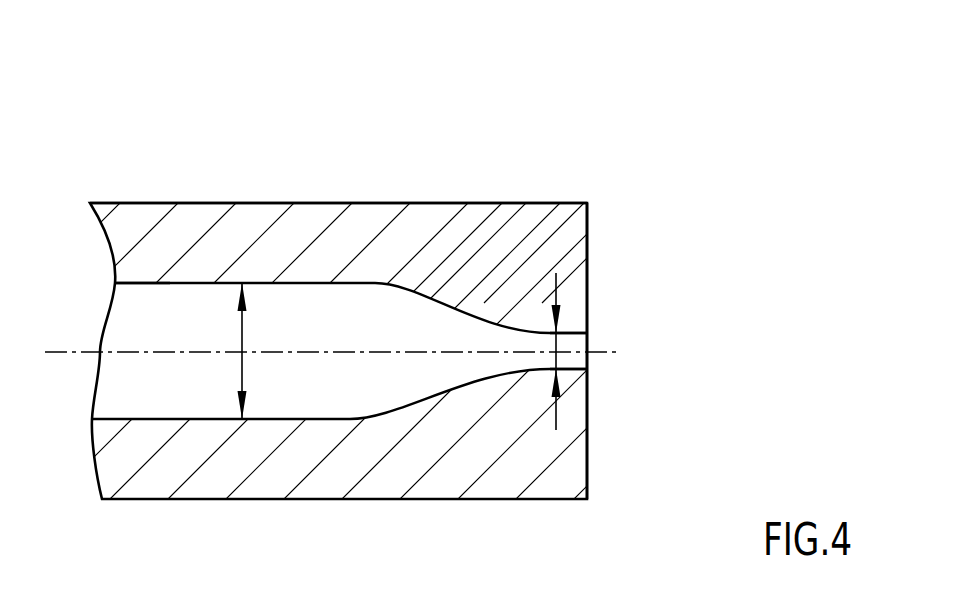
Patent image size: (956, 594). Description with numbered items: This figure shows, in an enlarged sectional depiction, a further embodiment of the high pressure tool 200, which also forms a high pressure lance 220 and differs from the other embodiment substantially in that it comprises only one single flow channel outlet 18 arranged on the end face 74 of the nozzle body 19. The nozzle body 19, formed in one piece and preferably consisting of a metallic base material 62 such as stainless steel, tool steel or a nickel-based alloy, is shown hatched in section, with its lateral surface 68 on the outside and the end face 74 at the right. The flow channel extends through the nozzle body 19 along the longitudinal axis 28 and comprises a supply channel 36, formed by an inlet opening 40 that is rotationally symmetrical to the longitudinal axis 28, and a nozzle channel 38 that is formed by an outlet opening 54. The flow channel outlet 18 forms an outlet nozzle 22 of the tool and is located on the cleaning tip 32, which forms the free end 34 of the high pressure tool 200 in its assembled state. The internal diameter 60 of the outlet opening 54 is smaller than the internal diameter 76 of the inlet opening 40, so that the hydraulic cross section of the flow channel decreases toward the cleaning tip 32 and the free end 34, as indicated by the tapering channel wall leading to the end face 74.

The high pressure tool 200 is at (466, 86).
The high pressure lance 220 is at (535, 110).
The nozzle body 19 is at (221, 170).
The supply channel 36 is at (159, 292).
The inlet opening 40 is at (140, 283).
The metallic base material 62 is at (300, 217).
The lateral surface 68 is at (415, 203).
The nozzle channel 38 is at (572, 312).
The internal diameter of the inlet opening 76 is at (242, 335).
The longitudinal axis 28 is at (60, 352).
The flow channel outlet 18 is at (651, 311).
The outlet nozzle 22 is at (619, 333).
The outlet opening 54 is at (586, 368).
The cleaning tip 32 is at (397, 439).
The free end 34 is at (627, 412).
The end face 74 is at (587, 462).
The internal diameter of the outlet opening 60 is at (553, 362).